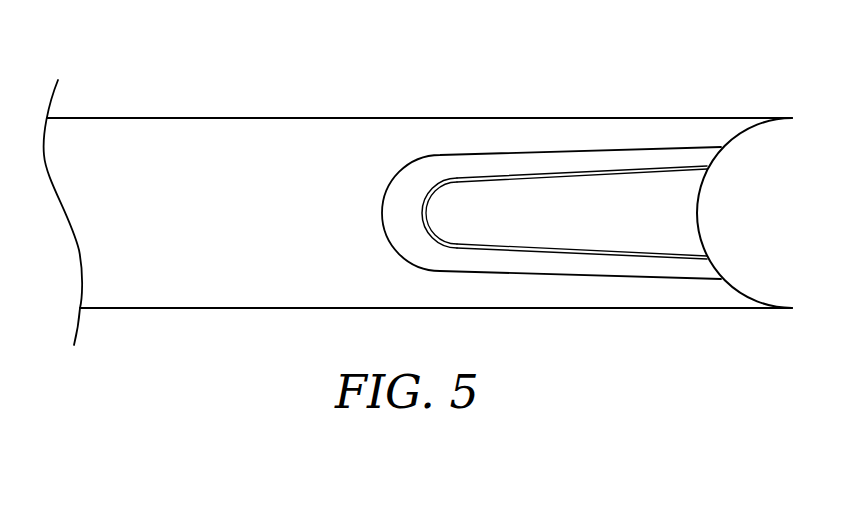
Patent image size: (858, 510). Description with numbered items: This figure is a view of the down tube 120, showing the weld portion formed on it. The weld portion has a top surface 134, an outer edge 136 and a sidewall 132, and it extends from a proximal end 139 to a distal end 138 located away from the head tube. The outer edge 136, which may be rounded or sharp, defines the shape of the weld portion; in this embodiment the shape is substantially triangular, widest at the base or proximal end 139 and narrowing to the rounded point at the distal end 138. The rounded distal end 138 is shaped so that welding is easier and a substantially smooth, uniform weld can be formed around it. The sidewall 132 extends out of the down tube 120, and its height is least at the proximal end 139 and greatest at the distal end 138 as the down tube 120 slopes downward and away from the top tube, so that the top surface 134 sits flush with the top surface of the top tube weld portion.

The down tube 120 is at (273, 135).
The sidewall 132 is at (495, 167).
The top surface 134 is at (612, 189).
The outer edge 136 is at (607, 254).
The distal end 138 is at (423, 213).
The proximal end 139 is at (697, 204).